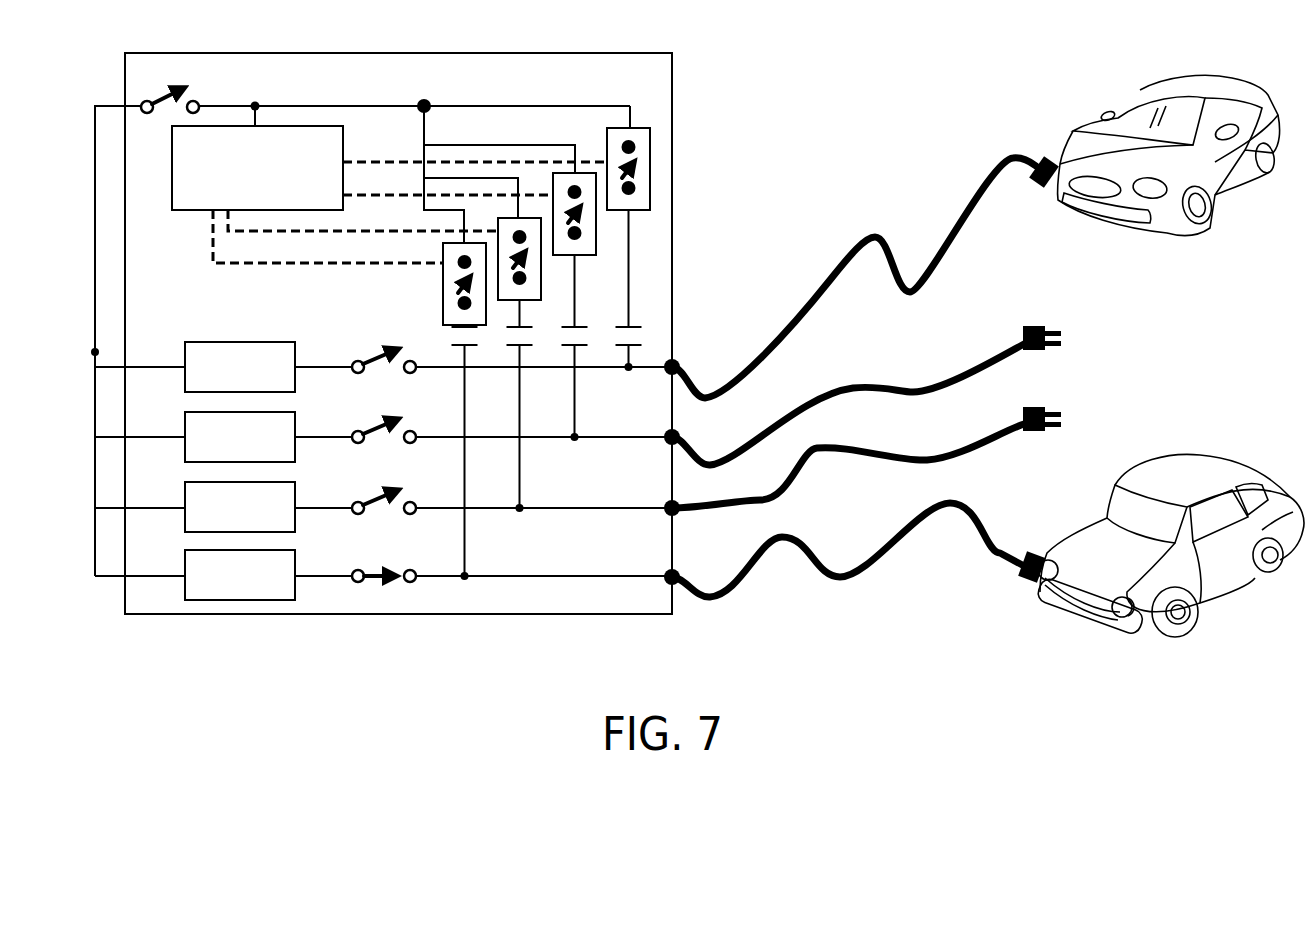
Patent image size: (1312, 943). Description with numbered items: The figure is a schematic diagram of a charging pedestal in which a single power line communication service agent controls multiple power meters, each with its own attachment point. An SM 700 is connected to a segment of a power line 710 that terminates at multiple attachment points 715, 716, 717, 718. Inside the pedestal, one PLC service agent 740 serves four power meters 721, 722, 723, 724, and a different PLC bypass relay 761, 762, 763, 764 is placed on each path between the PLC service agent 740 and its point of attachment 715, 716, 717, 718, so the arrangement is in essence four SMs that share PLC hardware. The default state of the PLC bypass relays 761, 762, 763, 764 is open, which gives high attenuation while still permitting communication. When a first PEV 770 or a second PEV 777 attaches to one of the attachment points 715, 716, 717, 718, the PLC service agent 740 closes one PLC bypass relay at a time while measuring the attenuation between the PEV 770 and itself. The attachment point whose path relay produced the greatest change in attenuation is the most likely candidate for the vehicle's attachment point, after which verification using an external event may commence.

The SM 700 is at (214, 52).
The power line 710 is at (95, 227).
The PLC service agent 740 is at (172, 204).
The power meter 721 is at (185, 353).
The power meter 722 is at (185, 423).
The power meter 723 is at (185, 493).
The power meter 724 is at (185, 561).
The PLC bypass relay 761 is at (650, 140).
The PLC bypass relay 762 is at (597, 243).
The PLC bypass relay 763 is at (543, 287).
The PLC bypass relay 764 is at (443, 287).
The attachment point 715 is at (983, 178).
The attachment point 716 is at (920, 388).
The attachment point 717 is at (968, 453).
The attachment point 718 is at (890, 538).
The first PEV 770 is at (1142, 90).
The second PEV 777 is at (1140, 462).